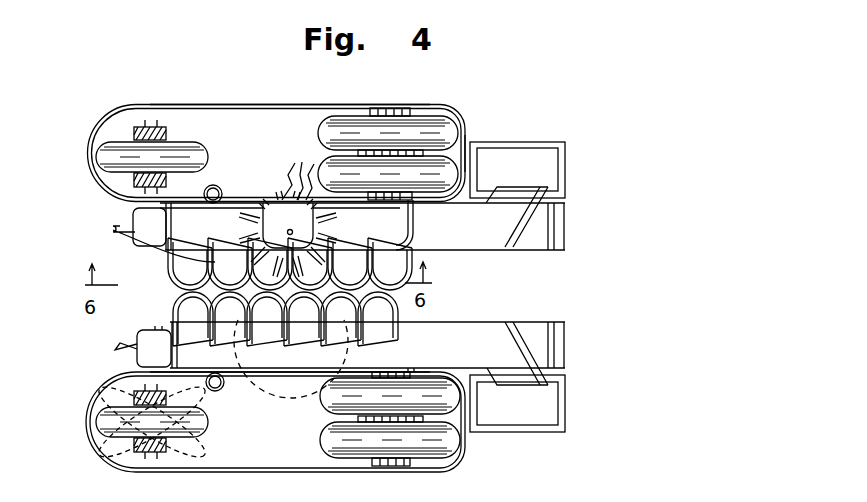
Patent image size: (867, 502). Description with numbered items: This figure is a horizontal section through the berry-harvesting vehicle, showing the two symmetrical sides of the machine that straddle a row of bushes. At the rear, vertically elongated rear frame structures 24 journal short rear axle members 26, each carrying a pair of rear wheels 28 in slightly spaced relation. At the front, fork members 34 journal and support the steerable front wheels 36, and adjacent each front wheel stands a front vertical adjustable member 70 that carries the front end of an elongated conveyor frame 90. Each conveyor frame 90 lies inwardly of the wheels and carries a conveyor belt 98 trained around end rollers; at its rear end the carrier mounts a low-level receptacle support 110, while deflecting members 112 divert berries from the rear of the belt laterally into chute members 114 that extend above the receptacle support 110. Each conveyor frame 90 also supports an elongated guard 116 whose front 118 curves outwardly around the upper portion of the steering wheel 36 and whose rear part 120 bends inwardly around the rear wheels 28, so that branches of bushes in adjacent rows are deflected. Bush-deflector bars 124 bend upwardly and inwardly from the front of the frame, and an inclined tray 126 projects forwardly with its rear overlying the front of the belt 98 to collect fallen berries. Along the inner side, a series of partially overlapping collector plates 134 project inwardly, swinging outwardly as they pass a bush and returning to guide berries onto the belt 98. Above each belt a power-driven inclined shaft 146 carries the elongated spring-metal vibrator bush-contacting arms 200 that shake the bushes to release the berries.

The rear frame structure 24 is at (423, 115).
The rear axle member 26 is at (383, 110).
The rear wheel 28 is at (443, 127).
The fork member 34 is at (162, 131).
The front wheel 36 is at (200, 150).
The front vertical adjustable member 70 is at (212, 186).
The conveyor frame 90 is at (564, 322).
The conveyor belt 98 is at (478, 330).
The receptacle support 110 is at (566, 165).
The deflecting member 112 is at (515, 322).
The chute member 114 is at (519, 190).
The guard 116 is at (288, 104).
The front of guard 118 is at (86, 157).
The rear part of guard 120 is at (466, 140).
The bush-deflector bar 124 is at (112, 233).
The inclined tray 126 is at (135, 220).
The collector plate 134 is at (195, 270).
The shaft 146 is at (288, 234).
The vibrator bush-contacting arm 200 is at (289, 170).